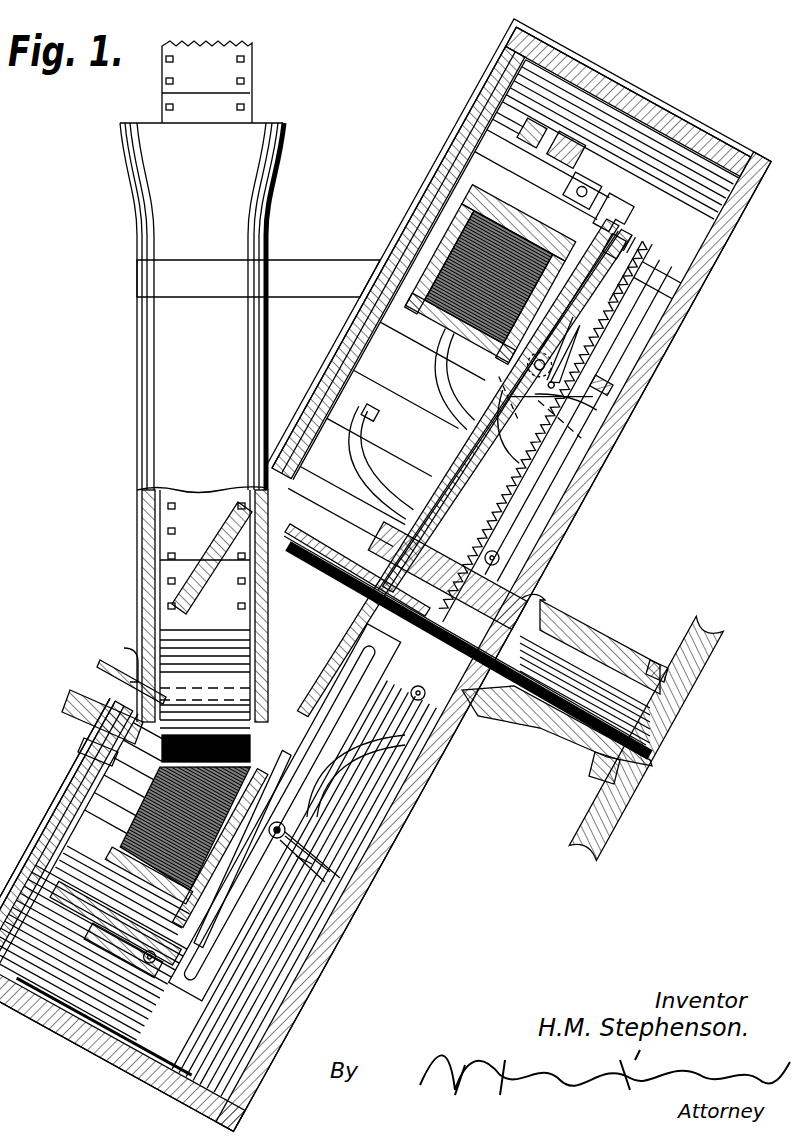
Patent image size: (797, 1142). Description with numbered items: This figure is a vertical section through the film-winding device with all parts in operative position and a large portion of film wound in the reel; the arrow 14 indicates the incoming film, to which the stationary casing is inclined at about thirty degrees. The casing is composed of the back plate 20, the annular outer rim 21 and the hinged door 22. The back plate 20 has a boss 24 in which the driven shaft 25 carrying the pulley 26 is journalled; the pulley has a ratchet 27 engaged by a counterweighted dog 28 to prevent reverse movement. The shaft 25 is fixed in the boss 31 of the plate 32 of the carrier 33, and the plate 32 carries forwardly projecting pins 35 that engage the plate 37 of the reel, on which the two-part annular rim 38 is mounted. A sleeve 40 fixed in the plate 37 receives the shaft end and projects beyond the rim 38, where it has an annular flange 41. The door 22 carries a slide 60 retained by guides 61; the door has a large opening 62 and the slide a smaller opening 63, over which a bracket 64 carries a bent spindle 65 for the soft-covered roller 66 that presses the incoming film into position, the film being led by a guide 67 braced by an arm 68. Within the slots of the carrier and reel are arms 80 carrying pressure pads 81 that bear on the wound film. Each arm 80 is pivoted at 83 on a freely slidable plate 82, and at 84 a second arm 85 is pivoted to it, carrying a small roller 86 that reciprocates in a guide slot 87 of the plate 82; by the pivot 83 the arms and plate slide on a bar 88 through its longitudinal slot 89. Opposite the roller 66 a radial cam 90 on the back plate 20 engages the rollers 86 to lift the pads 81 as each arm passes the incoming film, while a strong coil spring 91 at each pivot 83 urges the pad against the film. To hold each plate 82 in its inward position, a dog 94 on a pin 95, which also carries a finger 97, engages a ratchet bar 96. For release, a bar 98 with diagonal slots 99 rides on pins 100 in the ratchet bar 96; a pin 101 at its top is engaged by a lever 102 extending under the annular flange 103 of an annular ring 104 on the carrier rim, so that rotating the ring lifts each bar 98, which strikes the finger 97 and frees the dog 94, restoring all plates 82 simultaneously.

The direction of travel 14 is at (14, 372).
The back plate 20 is at (706, 296).
The annular outer rim 21 is at (672, 122).
The door 22 is at (520, 62).
The boss 24 is at (580, 628).
The driven shaft 25 is at (532, 718).
The pulley 26 is at (694, 696).
The ratchet 27 is at (592, 770).
The counterweighted dog 28 is at (662, 648).
The boss 31 is at (520, 578).
The plate 32 is at (488, 408).
The carrier 33 is at (500, 160).
The pins 35 is at (430, 478).
The plate 37 is at (452, 470).
The annular rim 38 is at (478, 204).
The sleeve 40 is at (366, 518).
The annular flange 41 is at (330, 504).
The slide 60 is at (486, 94).
The guides 61 is at (508, 38).
The opening 62 is at (104, 748).
The opening 63 is at (120, 714).
The bracket 64 is at (98, 676).
The bent spindle 65 is at (130, 652).
The roller 66 is at (172, 612).
The guide 67 is at (268, 184).
The arm 68 is at (318, 266).
The arms 80 is at (445, 333).
The pressure pads 81 is at (426, 392).
The plate 82 is at (608, 434).
The pivot 83 is at (556, 362).
The pivot 84 is at (330, 876).
The second arm 85 is at (592, 376).
The roller 86 is at (610, 392).
The guide slot 87 is at (602, 400).
The bar 88 is at (242, 930).
The slot 89 is at (226, 950).
The cam 90 is at (230, 986).
The coil spring 91 is at (628, 424).
The dog 94 is at (586, 344).
The pin 95 is at (592, 356).
The ratchet bar 96 is at (604, 288).
The finger 97 is at (582, 338).
The bar 98 is at (606, 292).
The diagonal slots 99 is at (630, 258).
The pins 100 is at (620, 232).
The pin 101 is at (628, 210).
The lever 102 is at (598, 196).
The annular flange 103 is at (572, 158).
The annular ring 104 is at (544, 162).